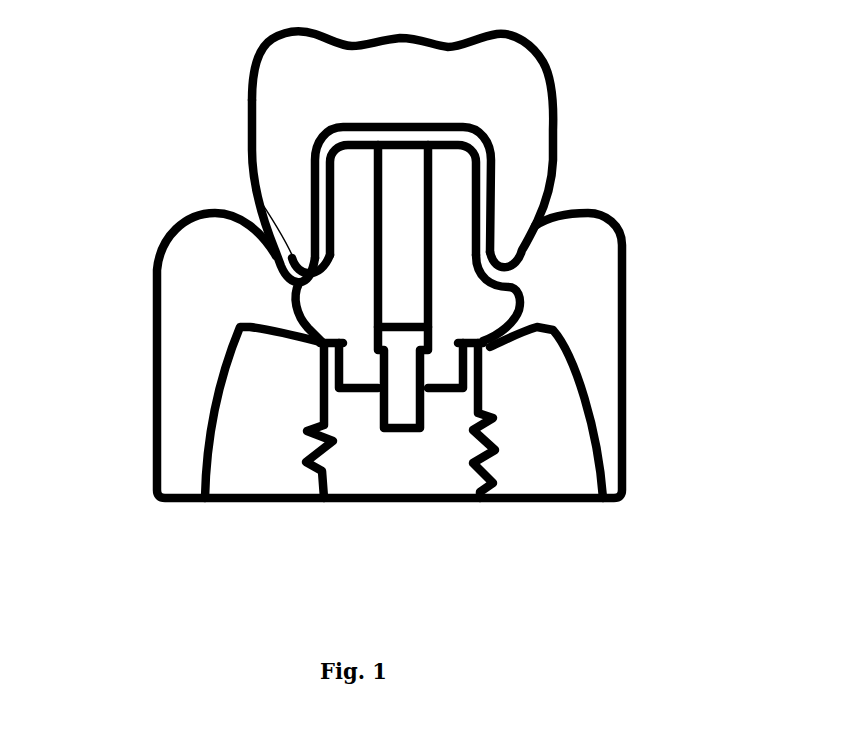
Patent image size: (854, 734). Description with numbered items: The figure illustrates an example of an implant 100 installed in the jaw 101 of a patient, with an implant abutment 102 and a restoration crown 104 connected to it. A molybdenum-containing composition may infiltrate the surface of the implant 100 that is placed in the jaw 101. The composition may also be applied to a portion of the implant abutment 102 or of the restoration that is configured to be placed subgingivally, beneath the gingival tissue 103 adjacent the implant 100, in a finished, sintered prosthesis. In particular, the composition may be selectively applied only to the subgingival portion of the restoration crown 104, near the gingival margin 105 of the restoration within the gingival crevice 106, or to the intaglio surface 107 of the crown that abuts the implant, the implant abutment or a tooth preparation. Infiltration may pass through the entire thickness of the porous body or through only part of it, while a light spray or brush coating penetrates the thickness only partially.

The implant 100 is at (445, 442).
The jaw 101 is at (530, 385).
The implant abutment 102 is at (303, 293).
The gingival tissue 103 is at (595, 253).
The restoration crown 104 is at (277, 155).
The gingival margin 105 is at (250, 187).
The gingival crevice 106 is at (543, 210).
The intaglio surface 107 is at (493, 233).